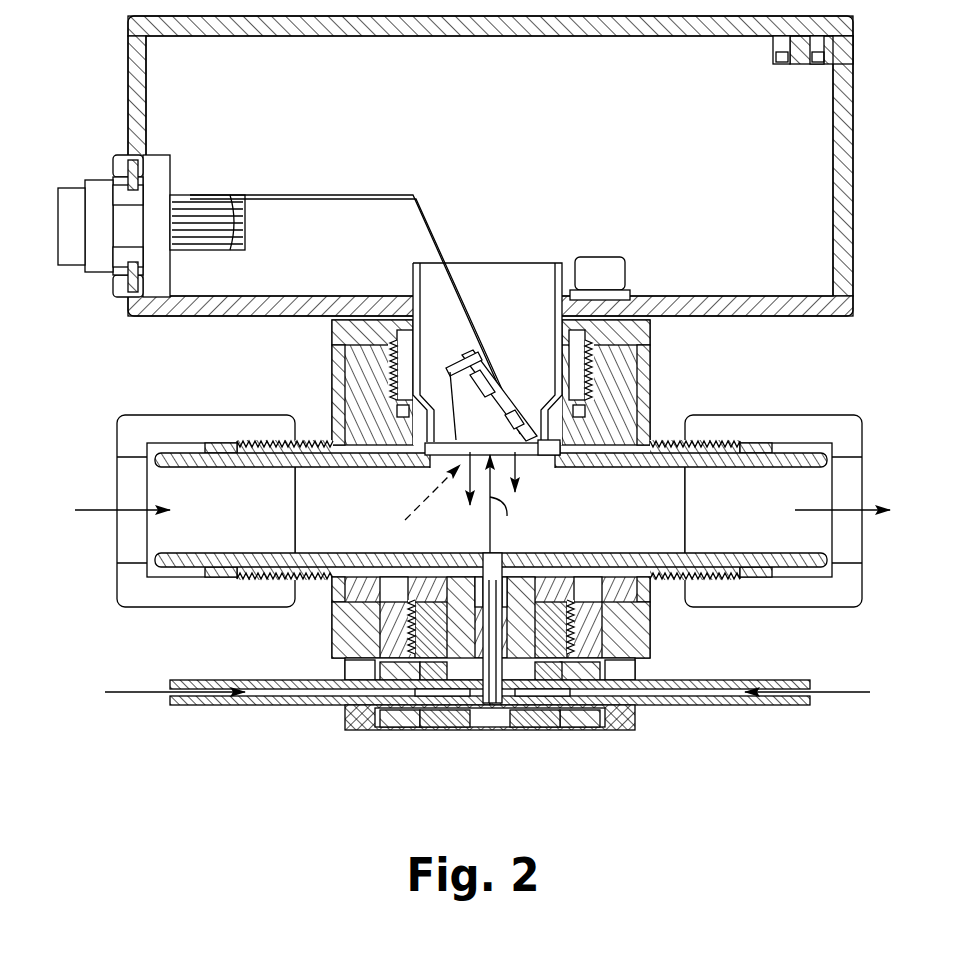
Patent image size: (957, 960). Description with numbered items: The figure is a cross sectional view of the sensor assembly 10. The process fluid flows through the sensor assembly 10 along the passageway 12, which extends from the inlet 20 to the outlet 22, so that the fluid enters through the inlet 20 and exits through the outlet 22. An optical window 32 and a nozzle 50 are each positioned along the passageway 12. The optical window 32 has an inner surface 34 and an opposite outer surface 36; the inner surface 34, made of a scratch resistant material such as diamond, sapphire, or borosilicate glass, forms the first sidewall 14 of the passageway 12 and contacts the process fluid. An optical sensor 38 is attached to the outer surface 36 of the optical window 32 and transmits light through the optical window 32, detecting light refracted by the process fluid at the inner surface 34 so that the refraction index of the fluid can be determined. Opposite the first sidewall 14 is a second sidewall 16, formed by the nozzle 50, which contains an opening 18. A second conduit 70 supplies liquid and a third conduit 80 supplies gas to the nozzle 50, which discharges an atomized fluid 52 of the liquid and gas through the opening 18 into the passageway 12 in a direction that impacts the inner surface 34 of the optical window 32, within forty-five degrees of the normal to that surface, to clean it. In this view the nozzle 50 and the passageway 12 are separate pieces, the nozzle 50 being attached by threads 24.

The sensor assembly 10 is at (463, 403).
The passageway 12 is at (163, 490).
The sidewall 14 is at (587, 470).
The second sidewall 16 is at (573, 553).
The opening 18 is at (477, 553).
The inlet 20 is at (160, 541).
The outlet 22 is at (828, 491).
The threads 24 is at (603, 640).
The optical window 32 is at (440, 456).
The inner surface 34 is at (530, 455).
The outer surface 36 is at (441, 440).
The optical sensor 38 is at (508, 375).
The nozzle 50 is at (493, 712).
The atomized fluid 52 is at (487, 545).
The second conduit 70 is at (242, 682).
The third conduit 80 is at (742, 682).